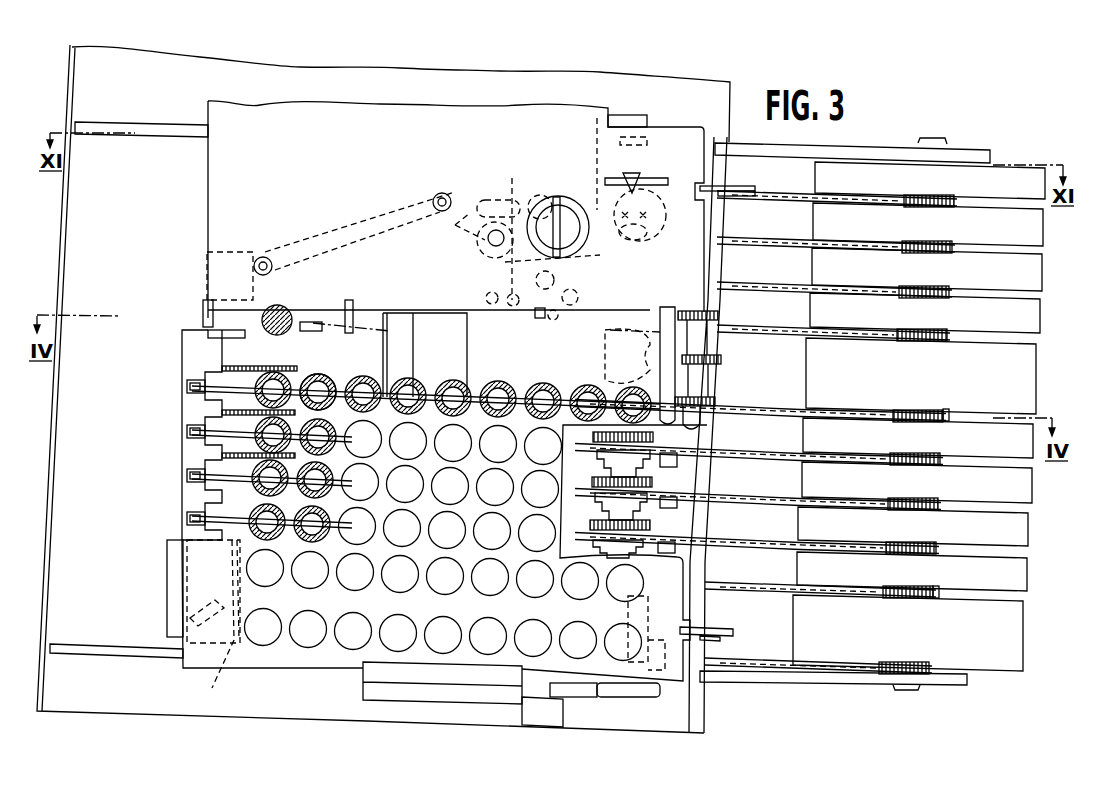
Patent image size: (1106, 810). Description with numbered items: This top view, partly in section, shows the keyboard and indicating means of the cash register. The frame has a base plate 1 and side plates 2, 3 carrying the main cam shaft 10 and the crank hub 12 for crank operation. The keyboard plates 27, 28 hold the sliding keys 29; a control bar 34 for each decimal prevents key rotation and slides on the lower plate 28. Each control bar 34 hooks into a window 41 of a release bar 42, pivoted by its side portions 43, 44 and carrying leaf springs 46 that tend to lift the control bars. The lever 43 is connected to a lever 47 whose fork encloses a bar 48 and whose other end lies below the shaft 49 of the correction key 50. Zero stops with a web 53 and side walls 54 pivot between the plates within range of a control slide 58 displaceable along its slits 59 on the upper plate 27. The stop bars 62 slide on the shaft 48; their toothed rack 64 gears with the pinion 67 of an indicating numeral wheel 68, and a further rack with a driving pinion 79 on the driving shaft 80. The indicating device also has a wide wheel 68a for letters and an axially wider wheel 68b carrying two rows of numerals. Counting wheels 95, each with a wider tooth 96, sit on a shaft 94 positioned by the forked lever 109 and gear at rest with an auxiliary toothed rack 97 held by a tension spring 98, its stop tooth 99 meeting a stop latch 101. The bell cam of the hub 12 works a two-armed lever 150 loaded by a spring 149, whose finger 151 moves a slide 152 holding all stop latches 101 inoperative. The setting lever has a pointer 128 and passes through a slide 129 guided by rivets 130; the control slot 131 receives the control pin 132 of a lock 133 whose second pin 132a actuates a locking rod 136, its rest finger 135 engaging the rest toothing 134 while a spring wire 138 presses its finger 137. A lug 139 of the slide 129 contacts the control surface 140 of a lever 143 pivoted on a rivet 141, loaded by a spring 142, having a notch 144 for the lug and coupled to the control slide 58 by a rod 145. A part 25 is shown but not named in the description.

The base plate 1 is at (66, 518).
The side plate 2 is at (98, 650).
The side plate 3 is at (162, 130).
The main cam shaft 10 is at (447, 364).
The crank hub 12 is at (537, 713).
The bar 25 is at (364, 686).
The upper key-board plate 27 is at (370, 120).
The lower key-board plate 28 is at (220, 497).
The keys 29 is at (543, 392).
The control bar 34 is at (228, 470).
The window 41 is at (198, 382).
The release bar 42 is at (180, 451).
The side portion 43 is at (220, 336).
The side portion 44 is at (219, 626).
The leaf springs 46 is at (188, 433).
The lever 47 is at (343, 372).
The bar 48 is at (345, 312).
The shaft of correction key 49 is at (303, 318).
The correction key 50 is at (268, 308).
The web of zero stop 53 is at (215, 420).
The side walls of zero stop 54 is at (242, 400).
The control slide 58 is at (208, 312).
The oblong slits 59 is at (212, 296).
The stop bar 62 is at (731, 407).
The toothed rack 64 is at (858, 388).
The pinion 67 is at (932, 408).
The indicating numeral wheel 68 is at (934, 450).
The first wide indicating wheel 68a is at (935, 656).
The second axially wider indicating wheel 68b is at (937, 373).
The driving pinion 79 is at (596, 452).
The driving shaft 80 is at (653, 511).
The shaft of counting register 94 is at (702, 380).
The counting wheels 95 is at (720, 317).
The axially wider tooth 96 is at (694, 408).
The auxiliary toothed rack 97 is at (693, 450).
The tension spring 98 is at (594, 518).
The stop tooth 99 is at (669, 465).
The stop latch 101 is at (612, 372).
The lever 109 is at (754, 188).
The pointer 128 is at (640, 175).
The slide 129 is at (640, 244).
The rivets 130 is at (512, 203).
The control slot 131 is at (588, 262).
The control pin 132 is at (535, 197).
The second pin 132a is at (597, 170).
The lock 133 is at (572, 228).
The rest toothing 134 is at (550, 279).
The rest finger 135 is at (512, 305).
The locking rod 136 is at (540, 318).
The finger 137 is at (557, 318).
The spring wire 138 is at (486, 298).
The lug 139 is at (483, 245).
The control surface 140 is at (455, 225).
The rivet 141 is at (488, 263).
The spring 142 is at (578, 297).
The lever 143 is at (472, 202).
The notch 144 is at (466, 196).
The rod 145 is at (322, 232).
The spring 149 is at (625, 690).
The two-armed lever 150 is at (578, 688).
The finger 151 is at (660, 666).
The slide 152 is at (660, 305).